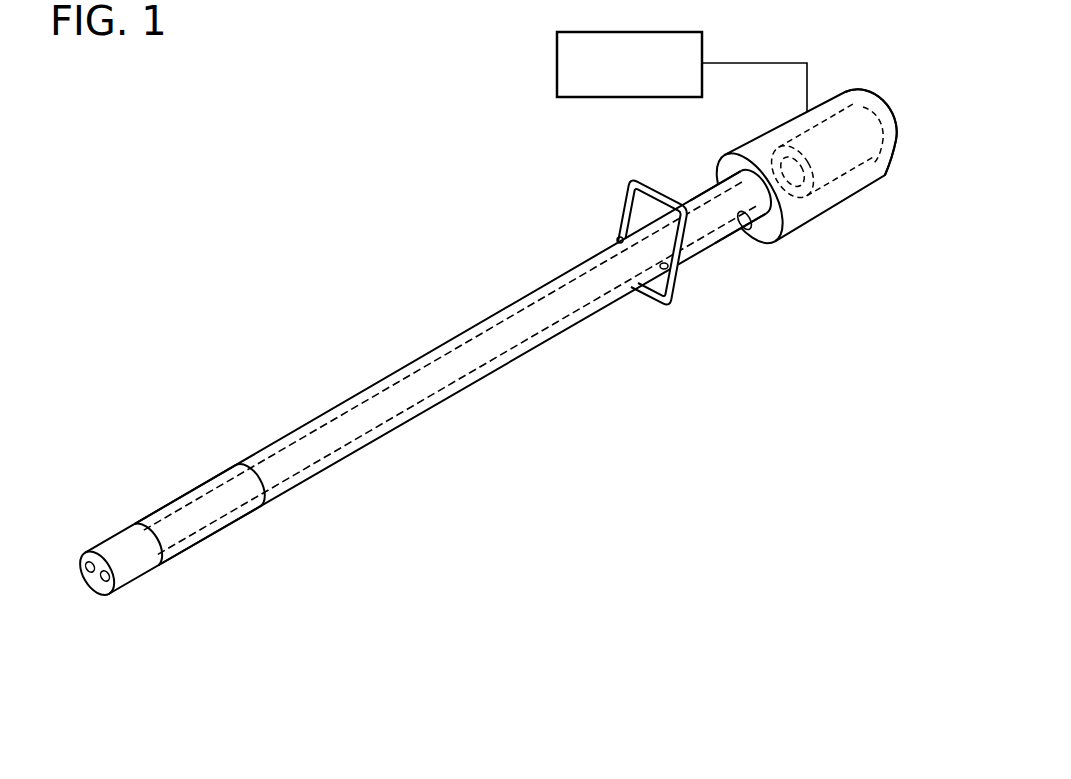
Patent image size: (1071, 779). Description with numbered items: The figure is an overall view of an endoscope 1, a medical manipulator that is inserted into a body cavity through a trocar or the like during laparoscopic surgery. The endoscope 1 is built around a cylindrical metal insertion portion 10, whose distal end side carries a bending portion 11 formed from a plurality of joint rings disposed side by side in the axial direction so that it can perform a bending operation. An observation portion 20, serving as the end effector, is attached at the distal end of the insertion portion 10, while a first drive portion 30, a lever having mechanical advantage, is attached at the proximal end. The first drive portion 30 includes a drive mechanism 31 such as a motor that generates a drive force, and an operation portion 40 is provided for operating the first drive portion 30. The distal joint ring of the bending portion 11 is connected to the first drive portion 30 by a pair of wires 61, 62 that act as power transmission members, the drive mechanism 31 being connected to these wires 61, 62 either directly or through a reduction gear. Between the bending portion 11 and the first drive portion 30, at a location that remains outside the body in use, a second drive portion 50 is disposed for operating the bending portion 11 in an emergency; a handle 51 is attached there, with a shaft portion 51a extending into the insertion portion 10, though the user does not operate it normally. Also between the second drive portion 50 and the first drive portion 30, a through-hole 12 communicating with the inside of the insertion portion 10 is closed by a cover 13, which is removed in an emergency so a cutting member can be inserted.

The endoscope 1 is at (318, 222).
The insertion portion 10 is at (452, 445).
The bending portion 11 is at (202, 511).
The through-hole 12 is at (727, 207).
The cover 13 is at (745, 220).
The observation portion 20 is at (121, 559).
The first drive portion 30 is at (510, 408).
The drive mechanism 31 is at (858, 152).
The operation portion 40 is at (540, 54).
The second drive portion 50 is at (670, 320).
The handle 51 is at (668, 288).
The shaft portion 51a is at (662, 270).
The wire 61 is at (443, 356).
The wire 62 is at (457, 380).